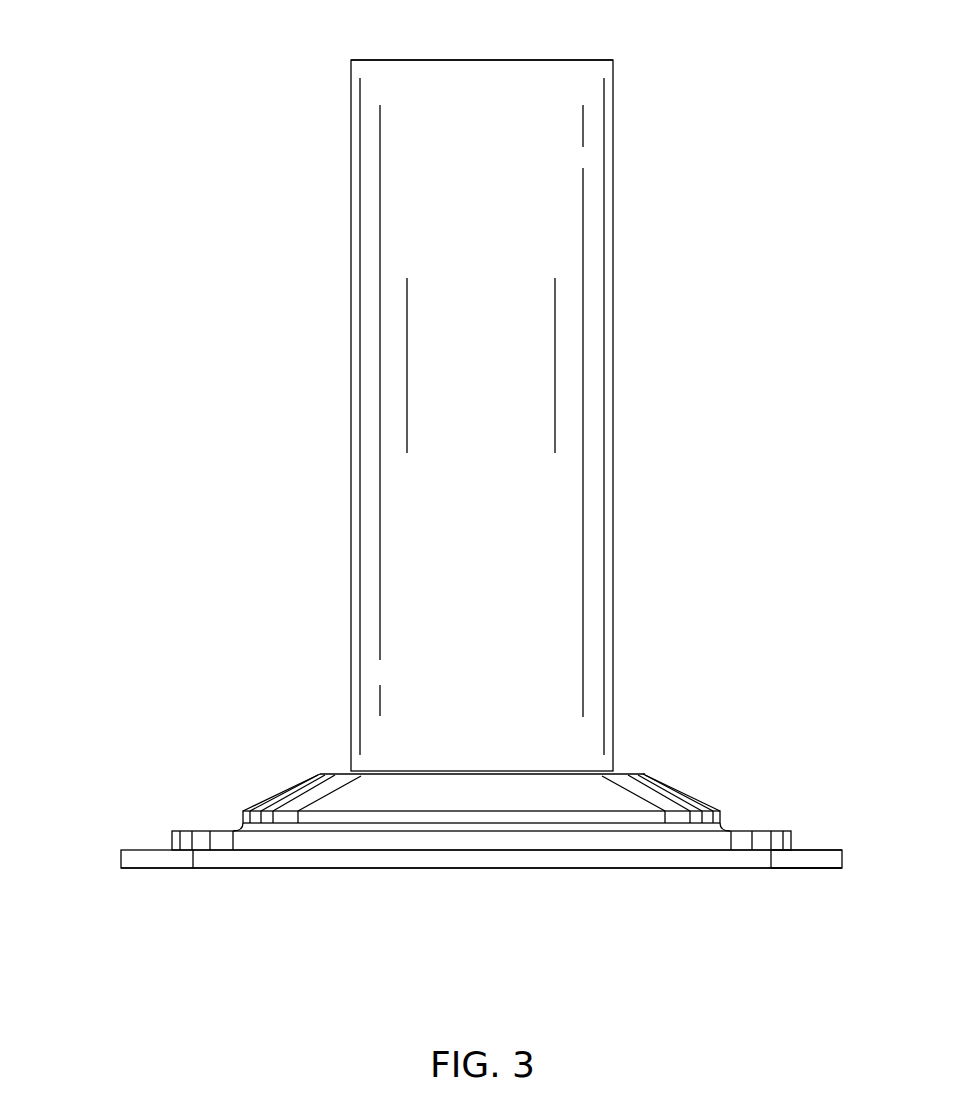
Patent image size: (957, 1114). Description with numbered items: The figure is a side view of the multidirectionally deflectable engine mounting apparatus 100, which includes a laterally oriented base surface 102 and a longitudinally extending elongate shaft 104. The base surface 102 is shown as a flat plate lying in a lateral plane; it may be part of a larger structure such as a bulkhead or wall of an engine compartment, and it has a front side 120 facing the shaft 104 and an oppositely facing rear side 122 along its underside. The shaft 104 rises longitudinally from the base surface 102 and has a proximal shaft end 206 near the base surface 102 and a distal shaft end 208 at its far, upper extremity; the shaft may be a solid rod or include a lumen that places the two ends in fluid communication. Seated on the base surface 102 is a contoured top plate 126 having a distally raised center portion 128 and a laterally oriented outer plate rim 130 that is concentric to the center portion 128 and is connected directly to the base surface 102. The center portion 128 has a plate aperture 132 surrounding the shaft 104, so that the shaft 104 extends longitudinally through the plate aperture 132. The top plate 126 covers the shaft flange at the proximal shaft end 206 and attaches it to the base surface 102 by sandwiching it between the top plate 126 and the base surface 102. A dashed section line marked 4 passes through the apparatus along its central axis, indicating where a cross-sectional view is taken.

The multidirectionally deflectable engine mounting apparatus 100 is at (783, 208).
The base surface 102 is at (127, 860).
The elongate shaft 104 is at (638, 407).
The front side 120 is at (822, 850).
The rear side 122 is at (799, 868).
The contoured top plate 126 is at (707, 792).
The center portion 128 is at (647, 787).
The outer plate rim 130 is at (780, 832).
The plate aperture 132 is at (542, 771).
The proximal shaft end 206 is at (277, 785).
The distal shaft end 208 is at (328, 60).
The section line 4- 4 is at (481, 945).